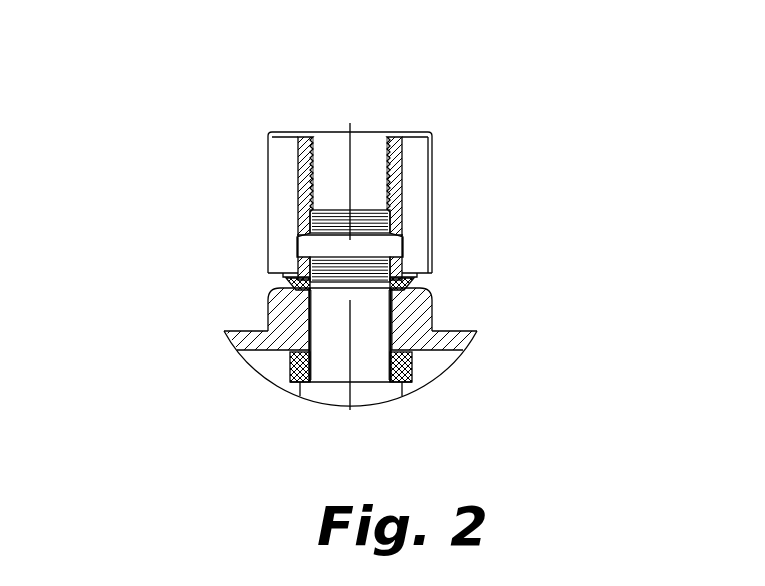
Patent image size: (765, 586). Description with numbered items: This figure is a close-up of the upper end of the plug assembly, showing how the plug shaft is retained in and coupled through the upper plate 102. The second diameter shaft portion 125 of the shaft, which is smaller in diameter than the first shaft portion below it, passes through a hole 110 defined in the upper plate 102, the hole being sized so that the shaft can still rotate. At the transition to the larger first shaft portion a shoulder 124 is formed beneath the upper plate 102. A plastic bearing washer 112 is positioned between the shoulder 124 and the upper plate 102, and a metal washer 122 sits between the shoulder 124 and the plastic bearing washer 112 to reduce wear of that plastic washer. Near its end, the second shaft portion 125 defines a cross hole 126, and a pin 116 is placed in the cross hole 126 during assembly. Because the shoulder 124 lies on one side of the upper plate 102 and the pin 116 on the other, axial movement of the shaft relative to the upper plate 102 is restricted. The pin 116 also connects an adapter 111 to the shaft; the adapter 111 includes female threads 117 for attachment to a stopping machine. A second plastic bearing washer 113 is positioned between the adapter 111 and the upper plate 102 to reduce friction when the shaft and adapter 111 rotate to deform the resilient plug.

The upper plate 102 is at (458, 352).
The hole 110 is at (400, 313).
The adapter 111 is at (413, 148).
The plastic bearing washer 112 is at (307, 352).
The plastic bearing washer 113 is at (288, 284).
The pin 116 is at (308, 237).
The female threads 117 is at (320, 143).
The metal washer 122 is at (298, 375).
The shoulder 124 is at (412, 386).
The second diameter shaft portion 125 is at (335, 330).
The cross hole 126 is at (403, 222).